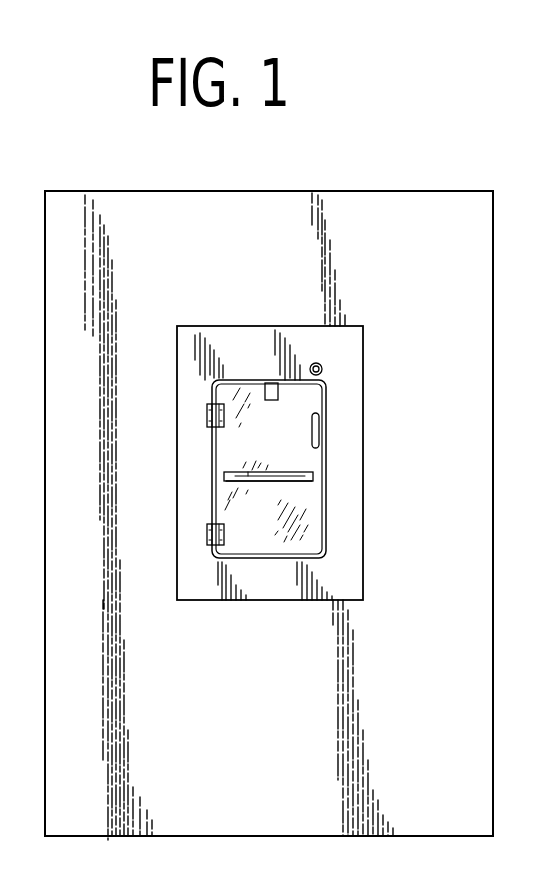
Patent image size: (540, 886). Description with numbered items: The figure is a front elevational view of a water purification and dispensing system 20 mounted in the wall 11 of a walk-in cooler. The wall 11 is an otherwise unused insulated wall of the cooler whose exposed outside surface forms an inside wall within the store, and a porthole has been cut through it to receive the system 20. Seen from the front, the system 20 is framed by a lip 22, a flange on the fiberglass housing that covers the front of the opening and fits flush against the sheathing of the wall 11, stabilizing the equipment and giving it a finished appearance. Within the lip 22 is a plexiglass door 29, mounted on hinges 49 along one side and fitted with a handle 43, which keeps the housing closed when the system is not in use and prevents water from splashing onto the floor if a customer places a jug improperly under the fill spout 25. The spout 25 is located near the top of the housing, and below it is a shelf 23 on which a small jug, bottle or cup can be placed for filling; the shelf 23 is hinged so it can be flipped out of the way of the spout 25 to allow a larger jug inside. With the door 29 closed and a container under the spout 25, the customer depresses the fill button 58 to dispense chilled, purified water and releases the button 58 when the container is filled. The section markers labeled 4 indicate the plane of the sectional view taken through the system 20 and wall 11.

The insulated wall 11 is at (470, 625).
The lip 22 is at (362, 487).
The plexiglass door 29 is at (253, 547).
The dispensing spout 25 is at (267, 392).
The handle 43 is at (318, 432).
The water purification and dispensing system 20 is at (314, 468).
The shelf 23 is at (303, 482).
The hinges 49 is at (208, 532).
The fill button 58 is at (316, 362).
The section line 4- 4 is at (172, 391).